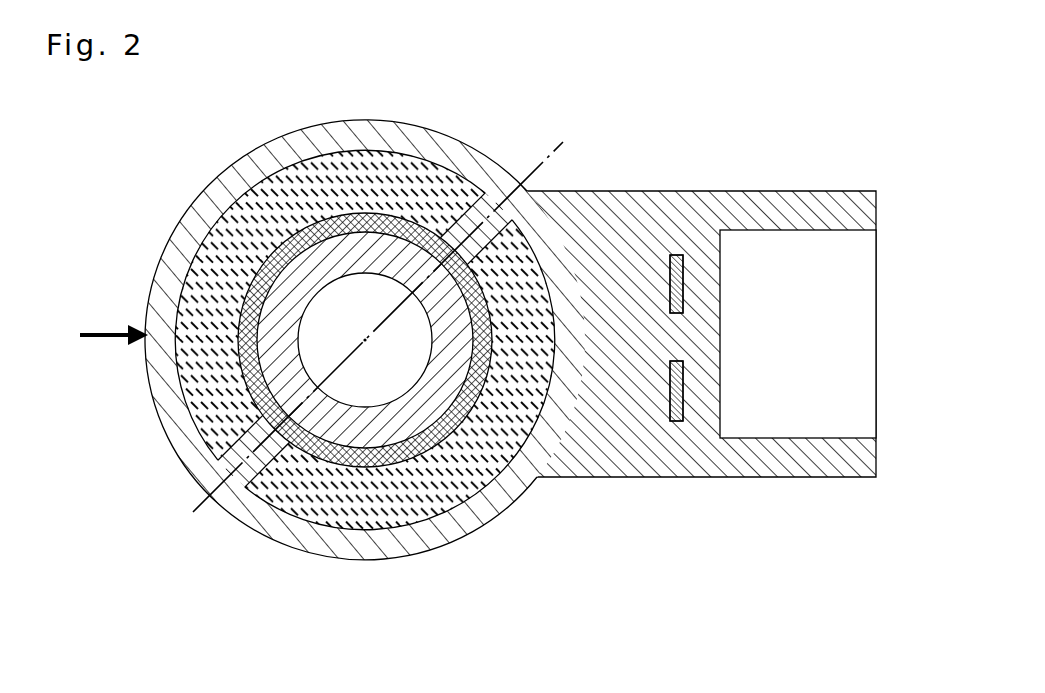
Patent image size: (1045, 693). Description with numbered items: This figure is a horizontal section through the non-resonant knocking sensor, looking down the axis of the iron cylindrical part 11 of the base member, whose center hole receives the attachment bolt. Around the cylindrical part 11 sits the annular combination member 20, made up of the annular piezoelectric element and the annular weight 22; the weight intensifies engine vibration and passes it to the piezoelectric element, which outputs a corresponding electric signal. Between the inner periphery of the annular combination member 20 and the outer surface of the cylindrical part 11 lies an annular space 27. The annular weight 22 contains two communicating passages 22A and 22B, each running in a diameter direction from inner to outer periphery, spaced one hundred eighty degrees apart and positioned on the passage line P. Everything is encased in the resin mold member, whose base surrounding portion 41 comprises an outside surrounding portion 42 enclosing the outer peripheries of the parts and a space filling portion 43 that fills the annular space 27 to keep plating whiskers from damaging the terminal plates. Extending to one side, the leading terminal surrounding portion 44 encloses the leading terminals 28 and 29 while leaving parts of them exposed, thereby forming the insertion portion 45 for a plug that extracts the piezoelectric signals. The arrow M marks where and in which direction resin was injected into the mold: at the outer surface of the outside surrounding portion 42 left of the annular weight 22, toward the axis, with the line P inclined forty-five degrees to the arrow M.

The cylindrical part 11 is at (368, 447).
The annular combination member 20 is at (190, 407).
The annular weight 22 is at (382, 333).
The communicating passage 22A is at (255, 480).
The communicating passage 22B is at (483, 202).
The annular space 27 is at (430, 498).
The leading terminal 28 is at (683, 373).
The leading terminal 29 is at (683, 278).
The base surrounding portion 41 is at (180, 242).
The outside surrounding portion 42 is at (364, 150).
The space filling portion 43 is at (337, 212).
The leading terminal surrounding portion 44 is at (774, 190).
The insertion portion 45 is at (857, 230).
The arrow M is at (102, 332).
The passage line P is at (381, 332).